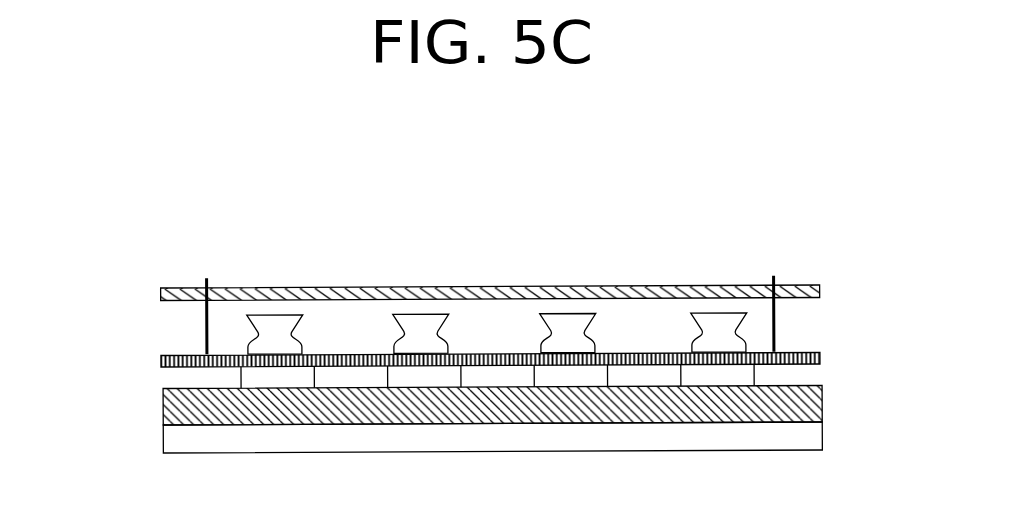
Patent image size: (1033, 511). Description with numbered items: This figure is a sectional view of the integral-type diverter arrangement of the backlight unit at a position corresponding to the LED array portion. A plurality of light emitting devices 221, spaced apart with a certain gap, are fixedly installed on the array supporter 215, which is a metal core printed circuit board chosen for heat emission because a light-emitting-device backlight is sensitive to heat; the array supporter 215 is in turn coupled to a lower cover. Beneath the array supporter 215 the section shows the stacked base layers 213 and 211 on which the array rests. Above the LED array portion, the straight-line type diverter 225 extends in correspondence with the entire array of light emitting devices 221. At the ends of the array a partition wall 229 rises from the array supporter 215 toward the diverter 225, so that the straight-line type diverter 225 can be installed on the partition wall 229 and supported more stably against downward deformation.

The substrate 211 is at (822, 435).
The insulating layer 213 is at (822, 403).
The array supporter 215 is at (820, 357).
The light emitting device 221 is at (712, 320).
The straight-line type diverter 225 is at (820, 291).
The partition wall 229 is at (204, 325).